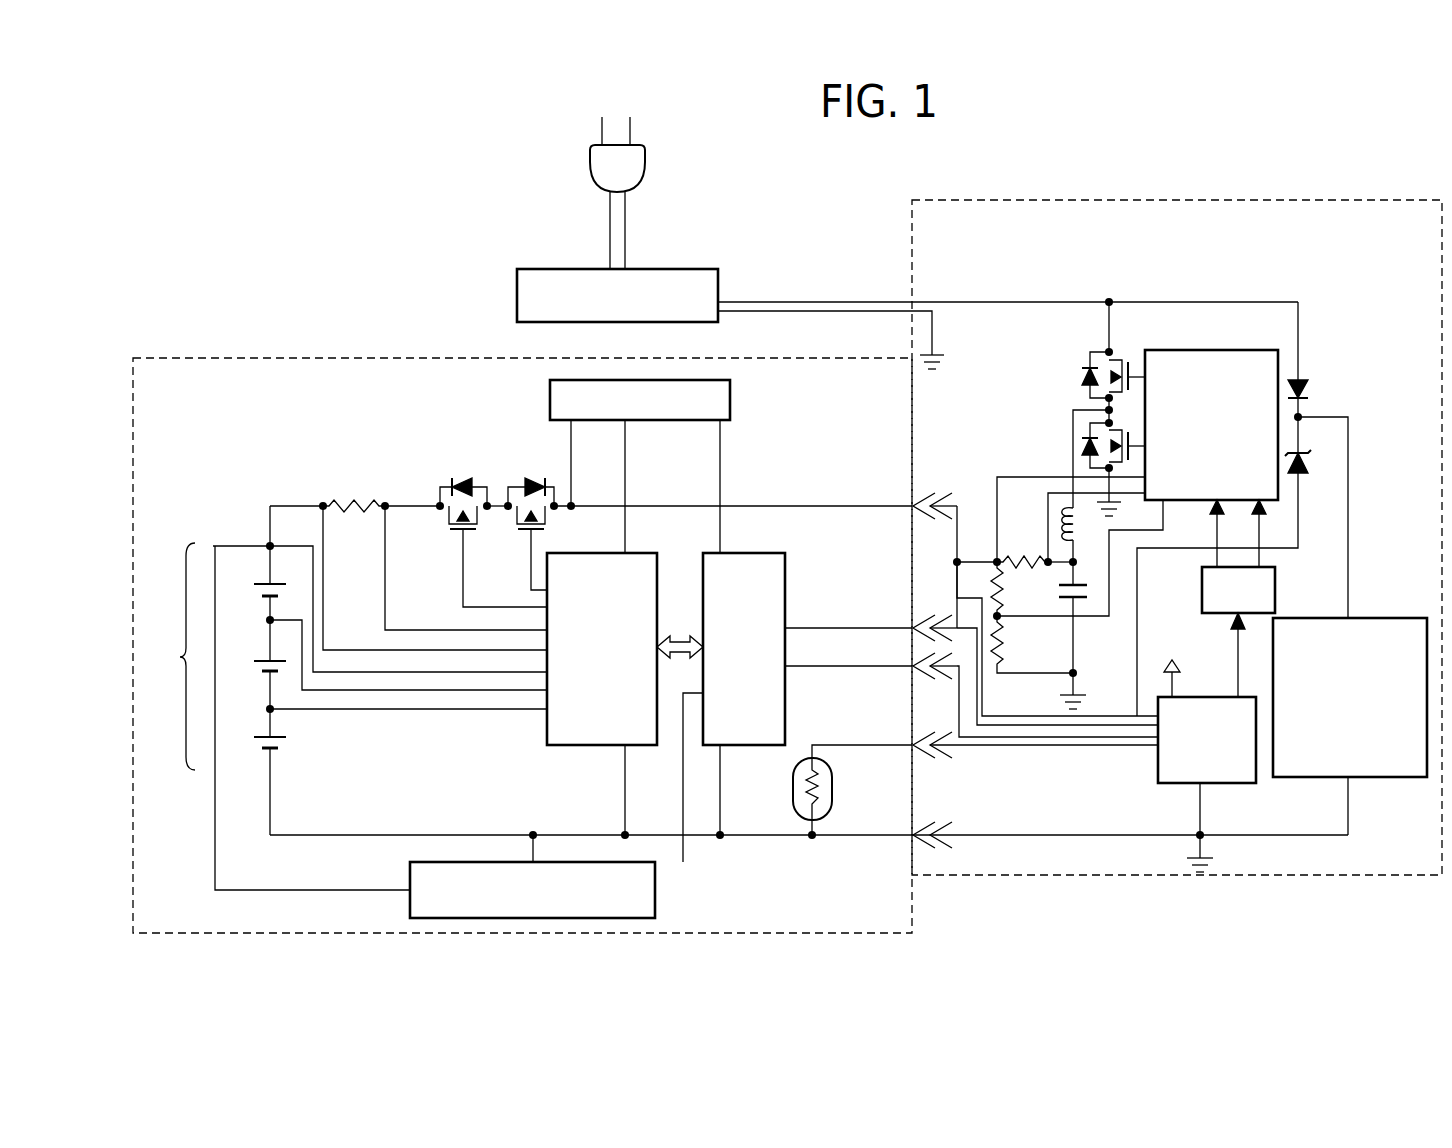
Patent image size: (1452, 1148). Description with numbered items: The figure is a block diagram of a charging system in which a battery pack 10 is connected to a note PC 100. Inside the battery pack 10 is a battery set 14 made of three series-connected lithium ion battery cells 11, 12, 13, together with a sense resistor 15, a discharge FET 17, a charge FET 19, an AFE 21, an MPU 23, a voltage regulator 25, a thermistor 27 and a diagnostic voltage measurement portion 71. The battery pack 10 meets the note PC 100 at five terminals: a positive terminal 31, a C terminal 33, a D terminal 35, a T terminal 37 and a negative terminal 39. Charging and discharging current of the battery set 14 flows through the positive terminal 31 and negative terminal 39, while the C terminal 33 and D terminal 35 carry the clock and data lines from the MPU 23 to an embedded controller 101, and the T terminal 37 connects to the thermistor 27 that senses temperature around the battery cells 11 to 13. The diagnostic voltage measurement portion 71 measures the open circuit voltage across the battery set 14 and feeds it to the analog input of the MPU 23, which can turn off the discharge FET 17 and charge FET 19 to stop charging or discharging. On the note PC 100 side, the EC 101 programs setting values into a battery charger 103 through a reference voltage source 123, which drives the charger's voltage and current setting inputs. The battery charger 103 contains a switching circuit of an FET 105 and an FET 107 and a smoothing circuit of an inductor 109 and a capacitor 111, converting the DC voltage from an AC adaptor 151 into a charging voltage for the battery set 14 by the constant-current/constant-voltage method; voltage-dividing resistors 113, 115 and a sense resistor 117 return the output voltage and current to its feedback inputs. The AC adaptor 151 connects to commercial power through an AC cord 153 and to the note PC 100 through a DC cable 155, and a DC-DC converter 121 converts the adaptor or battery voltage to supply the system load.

The battery pack 10 is at (225, 409).
The lithium ion battery cell 11 is at (256, 737).
The lithium ion battery cell 12 is at (256, 661).
The lithium ion battery cell 13 is at (256, 584).
The battery set 14 is at (212, 670).
The sense resistor 15 is at (355, 497).
The discharge FET 17 is at (462, 478).
The charge FET 19 is at (527, 478).
The AFE (analog front end) 21 is at (547, 740).
The MPU (micro processing unit) 23 is at (785, 572).
The voltage regulator 25 is at (550, 395).
The thermistor 27 is at (793, 780).
The positive (+) terminal 31 is at (937, 493).
The C terminal 33 is at (937, 615).
The D terminal 35 is at (935, 680).
The T terminal 37 is at (942, 752).
The negative (−) terminal 39 is at (925, 850).
The diagnostic voltage measurement portion 71 is at (655, 897).
The note PC 100 is at (970, 249).
The embedded controller (EC) 101 is at (1158, 778).
The battery charger 103 is at (1218, 350).
The FET 105 is at (1080, 370).
The FET 107 is at (1080, 438).
The inductor 109 is at (1064, 520).
The capacitor 111 is at (1088, 595).
The voltage-dividing resistor 113 is at (1003, 588).
The voltage-dividing resistor 115 is at (1005, 640).
The sense resistor 117 is at (1028, 557).
The DC-DC converter 121 is at (1365, 777).
The reference voltage source 123 is at (1275, 585).
The AC adaptor 151 is at (537, 269).
The AC cord 153 is at (608, 215).
The DC cable 155 is at (838, 302).